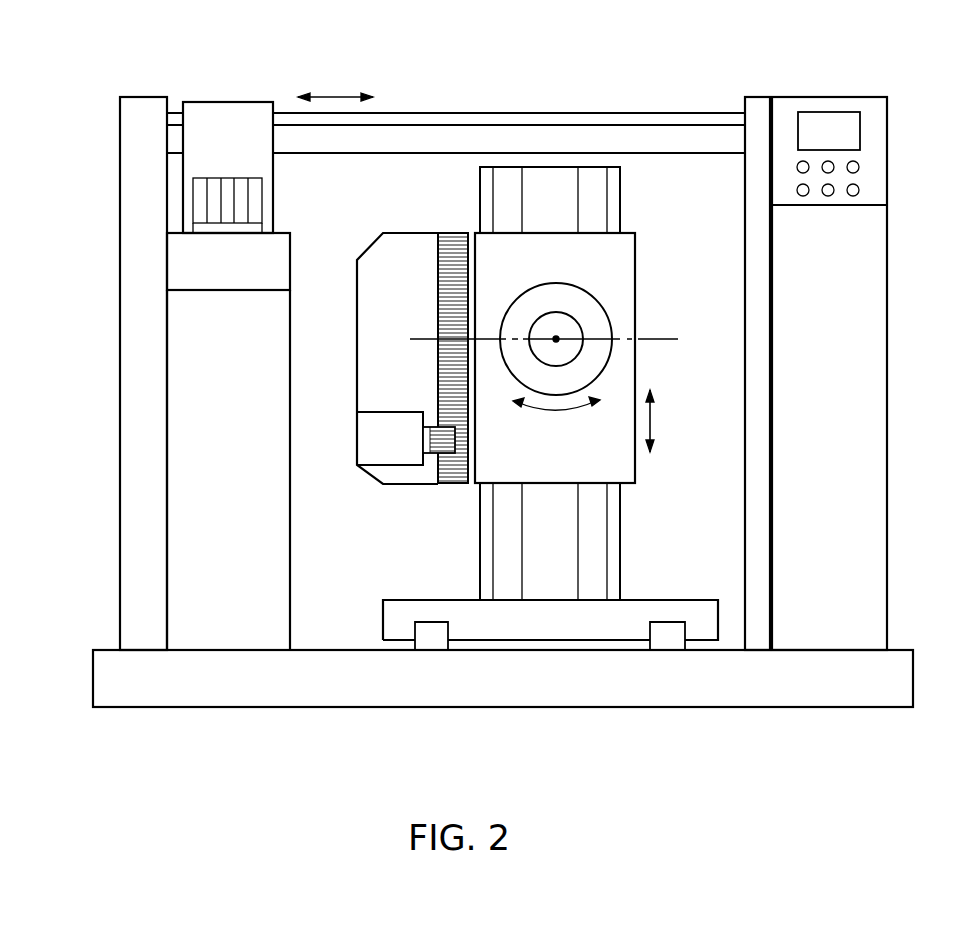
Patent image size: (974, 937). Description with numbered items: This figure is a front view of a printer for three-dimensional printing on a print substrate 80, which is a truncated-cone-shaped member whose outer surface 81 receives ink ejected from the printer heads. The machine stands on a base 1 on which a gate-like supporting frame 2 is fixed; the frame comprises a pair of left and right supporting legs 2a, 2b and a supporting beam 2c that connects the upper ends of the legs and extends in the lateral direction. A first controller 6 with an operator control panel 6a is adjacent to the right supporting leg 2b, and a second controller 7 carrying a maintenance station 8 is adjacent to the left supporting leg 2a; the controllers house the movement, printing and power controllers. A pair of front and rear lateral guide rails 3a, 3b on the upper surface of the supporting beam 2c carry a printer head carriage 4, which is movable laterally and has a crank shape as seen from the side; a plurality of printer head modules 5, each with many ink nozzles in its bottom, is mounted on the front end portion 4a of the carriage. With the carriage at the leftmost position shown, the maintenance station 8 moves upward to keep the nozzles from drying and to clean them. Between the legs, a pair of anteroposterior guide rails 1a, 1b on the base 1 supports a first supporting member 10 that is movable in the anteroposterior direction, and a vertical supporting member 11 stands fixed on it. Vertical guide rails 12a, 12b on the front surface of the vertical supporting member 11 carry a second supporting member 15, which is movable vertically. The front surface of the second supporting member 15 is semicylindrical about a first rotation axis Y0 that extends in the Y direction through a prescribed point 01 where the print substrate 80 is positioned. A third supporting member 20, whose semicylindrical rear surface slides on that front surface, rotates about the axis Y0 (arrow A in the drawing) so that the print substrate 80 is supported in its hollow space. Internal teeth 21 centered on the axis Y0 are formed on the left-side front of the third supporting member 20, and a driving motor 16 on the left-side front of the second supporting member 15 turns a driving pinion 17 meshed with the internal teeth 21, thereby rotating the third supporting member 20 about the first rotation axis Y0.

The base 1 is at (915, 678).
The anteroposterior guide rail 1a is at (432, 645).
The anteroposterior guide rail 1b is at (669, 645).
The gate-like supporting frame 2 is at (411, 341).
The left supporting leg 2a is at (133, 190).
The right supporting leg 2b is at (757, 103).
The supporting beam 2c is at (605, 130).
The lateral guide rail 3a is at (443, 113).
The lateral guide rail 3b is at (442, 72).
The printer head carriage 4 is at (193, 152).
The front end portion 4a is at (198, 228).
The printer head module 5 is at (258, 197).
The first controller 6 is at (860, 373).
The operator control panel 6a is at (880, 153).
The second controller 7 is at (183, 391).
The maintenance station 8 is at (275, 253).
The first supporting member 10 is at (647, 605).
The vertical supporting member 11 is at (566, 383).
The vertical guide rail 12a is at (498, 566).
The vertical guide rail 12b is at (592, 513).
The second supporting member 15 is at (413, 240).
The driving motor 16 is at (380, 452).
The driving pinion 17 is at (433, 447).
The third supporting member 20 is at (568, 342).
The internal teeth 21 is at (440, 357).
The print substrate 80 is at (601, 364).
The outer surface 81 is at (522, 305).
The prescribed point 01 is at (558, 337).
The first rotation axis Y0 is at (655, 339).
The rotation direction A is at (553, 413).